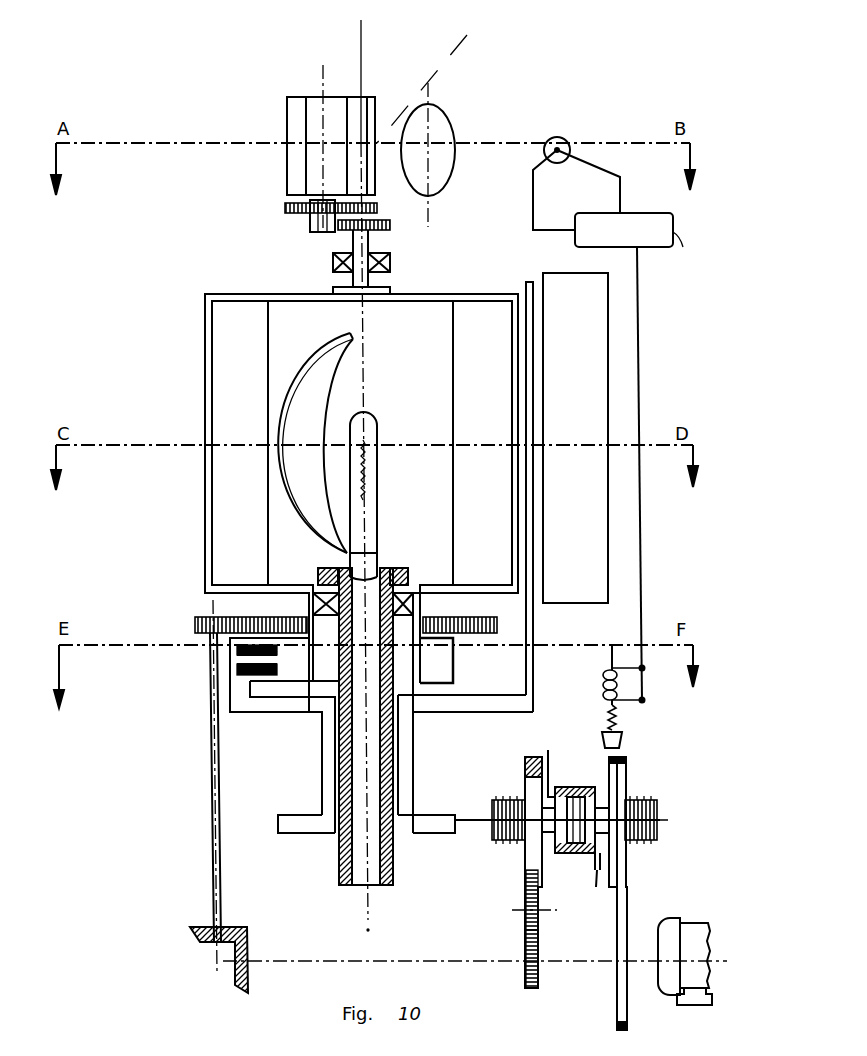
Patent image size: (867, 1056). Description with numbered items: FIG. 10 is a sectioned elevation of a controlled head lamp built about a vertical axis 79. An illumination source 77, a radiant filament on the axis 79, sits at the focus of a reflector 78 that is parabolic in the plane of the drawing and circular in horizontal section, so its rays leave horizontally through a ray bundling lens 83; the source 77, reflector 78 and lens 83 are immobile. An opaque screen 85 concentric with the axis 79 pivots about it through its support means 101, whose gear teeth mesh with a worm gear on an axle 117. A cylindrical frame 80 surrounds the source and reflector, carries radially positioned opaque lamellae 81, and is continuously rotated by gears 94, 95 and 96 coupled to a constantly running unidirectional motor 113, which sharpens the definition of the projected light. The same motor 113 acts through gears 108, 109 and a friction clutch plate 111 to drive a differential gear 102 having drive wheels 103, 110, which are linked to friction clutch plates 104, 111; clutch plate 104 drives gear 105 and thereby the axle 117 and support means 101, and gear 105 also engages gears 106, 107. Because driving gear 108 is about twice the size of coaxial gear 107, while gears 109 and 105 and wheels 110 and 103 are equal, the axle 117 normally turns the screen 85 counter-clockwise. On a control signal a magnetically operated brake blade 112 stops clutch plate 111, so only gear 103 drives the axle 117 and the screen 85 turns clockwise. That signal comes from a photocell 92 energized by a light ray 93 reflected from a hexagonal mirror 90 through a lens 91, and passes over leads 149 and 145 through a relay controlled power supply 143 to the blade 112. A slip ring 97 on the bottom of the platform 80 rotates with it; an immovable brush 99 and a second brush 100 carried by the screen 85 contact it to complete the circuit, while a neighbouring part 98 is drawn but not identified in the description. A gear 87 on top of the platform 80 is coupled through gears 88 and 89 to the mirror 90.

The illumination source 77 is at (370, 436).
The reflector 78 is at (323, 385).
The axis of revolution 79 is at (366, 478).
The cylindrical frame 80 is at (436, 570).
The lamellae 81 is at (460, 494).
The ray bundling lens 83 is at (600, 352).
The opaque screen 85 is at (533, 672).
The gear 87 is at (390, 226).
The gear 88 is at (310, 228).
The gear 89 is at (285, 210).
The polygonal mirror 90 is at (367, 115).
The lens 91 is at (440, 127).
The photocell 92 is at (557, 163).
The light ray 93 is at (436, 79).
The gear 94 is at (486, 633).
The gear 95 is at (195, 626).
The gear 96 is at (250, 942).
The slip ring 97 is at (302, 670).
The armature 98 is at (281, 678).
The brush 99 is at (236, 650).
The second brush 100 is at (236, 676).
The support means 101 is at (440, 824).
The differential gear 102 is at (575, 785).
The drive wheel 103 is at (552, 761).
The friction clutch plate 104 is at (532, 757).
The gear 105 is at (525, 768).
The gear 106 is at (528, 922).
The gear 107 is at (527, 974).
The driving gear 108 is at (627, 930).
The gear 109 is at (626, 767).
The drive wheel 110 is at (597, 879).
The friction clutch plate 111 is at (615, 777).
The brake blade 112 is at (622, 741).
The motor 113 is at (692, 935).
The axle 117 is at (477, 827).
The relay controlled power supply 143 is at (685, 261).
The lead 145 is at (640, 404).
The lead 149 is at (620, 196).